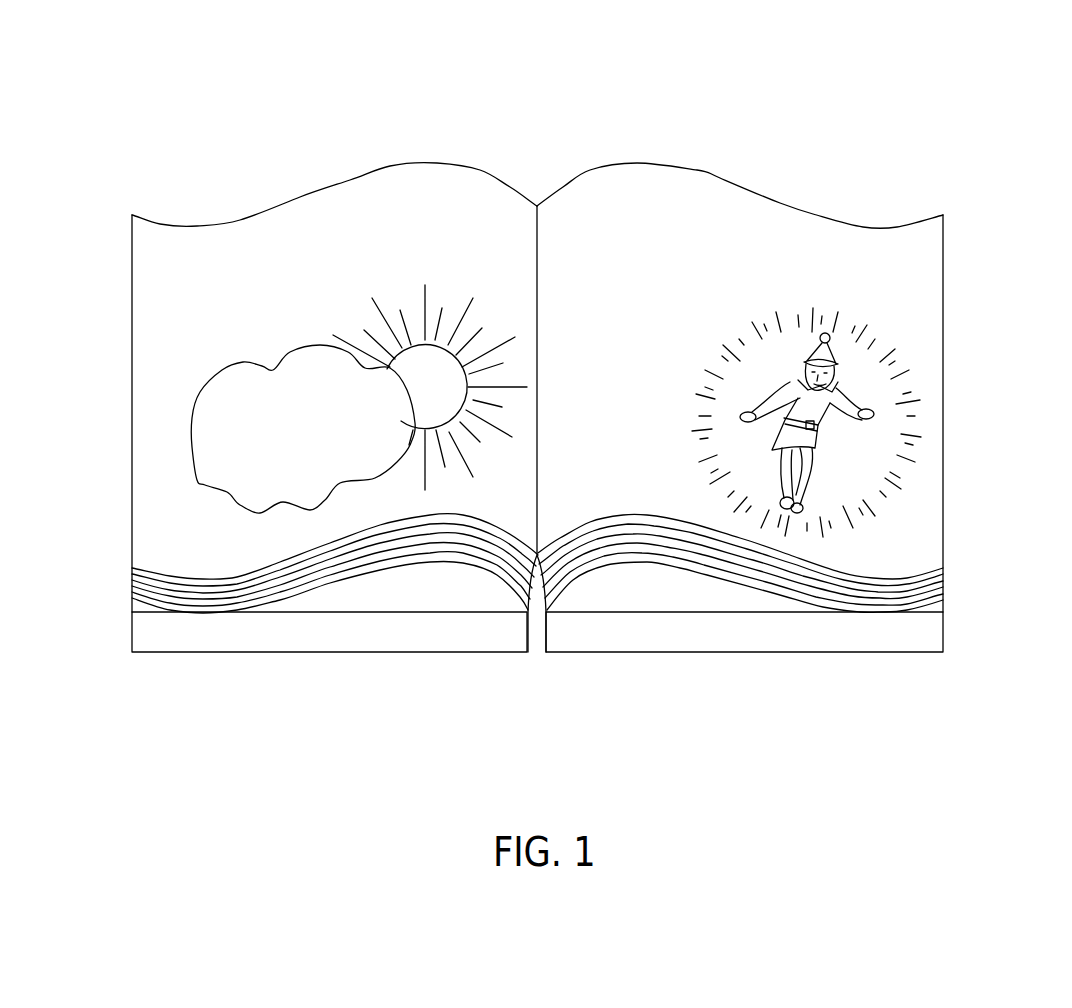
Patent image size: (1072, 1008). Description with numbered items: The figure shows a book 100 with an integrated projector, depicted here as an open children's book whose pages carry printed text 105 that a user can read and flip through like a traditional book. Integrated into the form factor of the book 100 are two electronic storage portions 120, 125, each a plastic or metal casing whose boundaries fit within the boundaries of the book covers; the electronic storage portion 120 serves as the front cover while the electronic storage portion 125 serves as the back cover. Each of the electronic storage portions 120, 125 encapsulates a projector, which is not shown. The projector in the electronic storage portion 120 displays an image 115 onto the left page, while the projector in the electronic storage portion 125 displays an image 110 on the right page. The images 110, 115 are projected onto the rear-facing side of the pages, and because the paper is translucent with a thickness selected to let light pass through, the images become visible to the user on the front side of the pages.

The book 100 is at (872, 135).
The printed text 105 is at (337, 248).
The image 110 is at (863, 377).
The image 115 is at (170, 429).
The electronic storage portion 120 is at (439, 665).
The electronic storage portion 125 is at (807, 664).